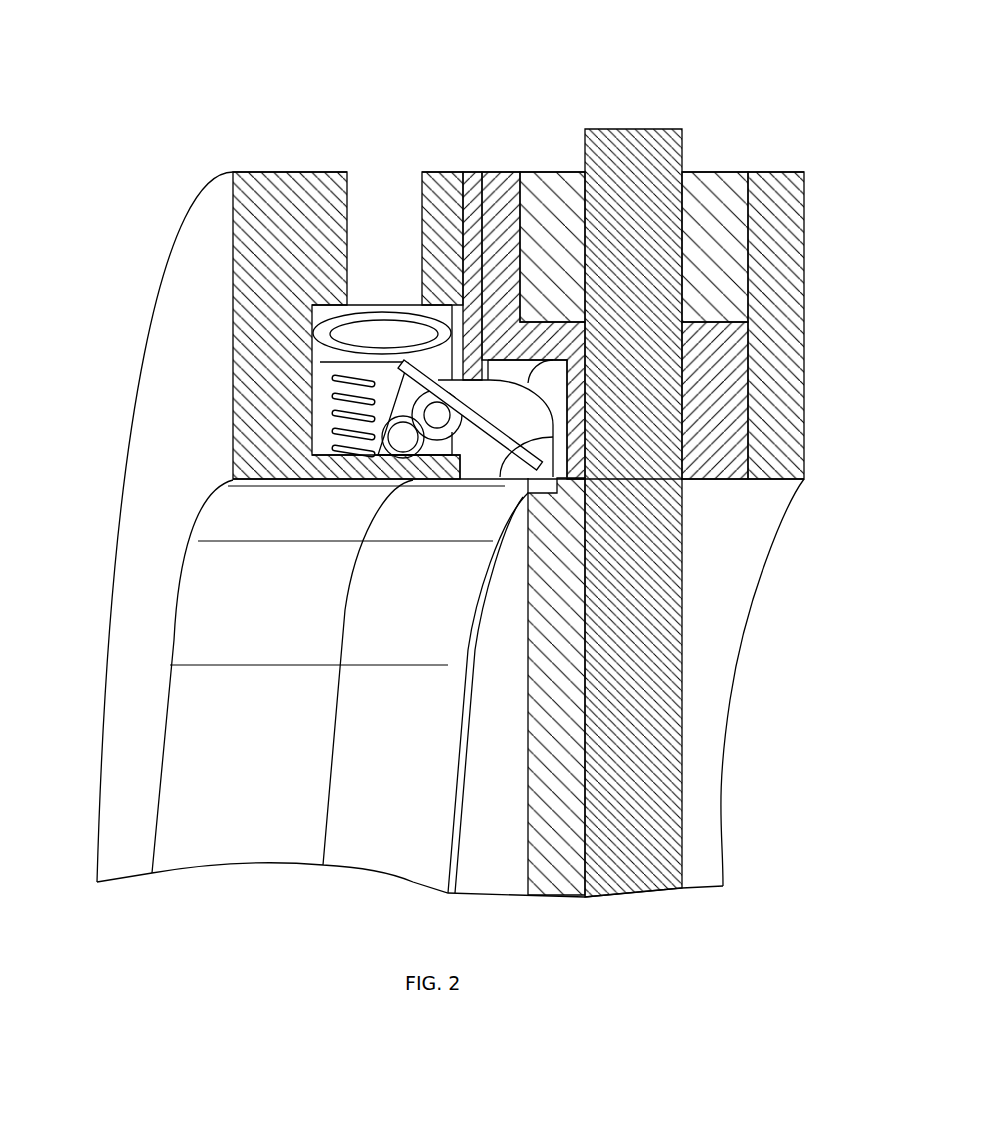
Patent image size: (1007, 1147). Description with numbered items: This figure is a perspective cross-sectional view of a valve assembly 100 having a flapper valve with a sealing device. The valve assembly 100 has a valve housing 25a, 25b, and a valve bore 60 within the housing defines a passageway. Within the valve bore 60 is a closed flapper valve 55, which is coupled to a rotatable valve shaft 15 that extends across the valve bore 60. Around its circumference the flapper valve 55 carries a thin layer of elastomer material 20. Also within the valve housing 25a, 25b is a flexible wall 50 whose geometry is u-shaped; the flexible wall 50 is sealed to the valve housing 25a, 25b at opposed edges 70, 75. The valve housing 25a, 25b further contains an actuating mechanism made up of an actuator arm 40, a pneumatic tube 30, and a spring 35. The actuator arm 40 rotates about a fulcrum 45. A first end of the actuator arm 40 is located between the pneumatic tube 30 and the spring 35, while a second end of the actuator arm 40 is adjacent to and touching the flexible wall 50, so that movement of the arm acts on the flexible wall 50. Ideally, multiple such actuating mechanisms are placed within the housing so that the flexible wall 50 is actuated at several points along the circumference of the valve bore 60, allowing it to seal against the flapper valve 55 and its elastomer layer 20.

The valve assembly 100 is at (108, 52).
The rotatable valve shaft 15 is at (585, 129).
The valve housing 25a is at (262, 172).
The valve housing 25b is at (768, 172).
The opposed edge 70 is at (482, 172).
The pneumatic tube 30 is at (325, 333).
The actuator arm 40 is at (322, 364).
The spring 35 is at (337, 396).
The fulcrum 45 is at (437, 415).
The flexible wall 50 is at (556, 423).
The opposed edge 75 is at (387, 479).
The thin layer of elastomer material 20 is at (493, 542).
The valve bore 60 is at (746, 753).
The flapper valve 55 is at (589, 875).